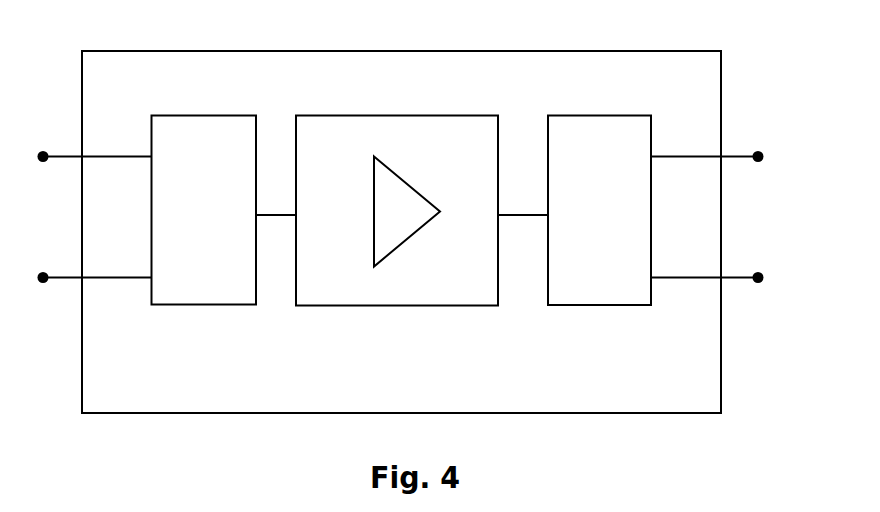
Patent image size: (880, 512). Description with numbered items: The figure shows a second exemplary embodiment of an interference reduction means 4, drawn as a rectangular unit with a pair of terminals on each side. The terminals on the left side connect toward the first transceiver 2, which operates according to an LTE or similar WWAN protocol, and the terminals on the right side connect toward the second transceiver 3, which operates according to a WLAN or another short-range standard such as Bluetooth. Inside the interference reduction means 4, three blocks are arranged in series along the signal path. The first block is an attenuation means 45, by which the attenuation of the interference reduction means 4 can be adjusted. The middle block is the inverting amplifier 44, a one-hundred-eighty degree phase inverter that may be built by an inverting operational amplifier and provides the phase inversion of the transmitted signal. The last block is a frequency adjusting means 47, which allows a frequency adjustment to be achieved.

The interference reduction means 4 is at (722, 67).
The first transceiver 2 is at (90, 217).
The second transceiver 3 is at (712, 217).
The attenuation means 45 is at (205, 304).
The inverting amplifier 44 is at (470, 306).
The frequency adjusting means 47 is at (588, 306).